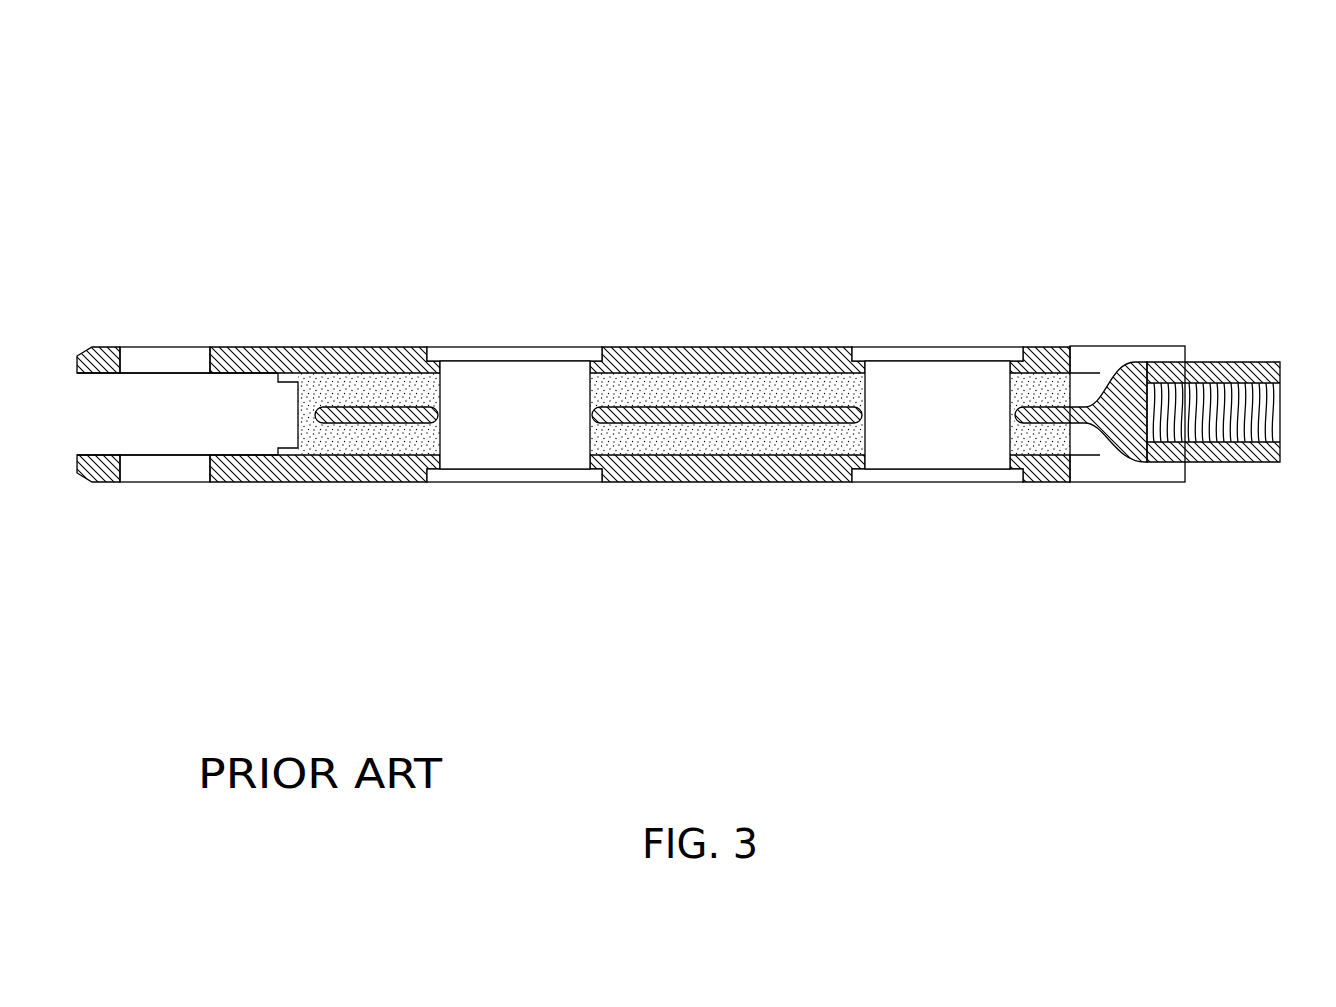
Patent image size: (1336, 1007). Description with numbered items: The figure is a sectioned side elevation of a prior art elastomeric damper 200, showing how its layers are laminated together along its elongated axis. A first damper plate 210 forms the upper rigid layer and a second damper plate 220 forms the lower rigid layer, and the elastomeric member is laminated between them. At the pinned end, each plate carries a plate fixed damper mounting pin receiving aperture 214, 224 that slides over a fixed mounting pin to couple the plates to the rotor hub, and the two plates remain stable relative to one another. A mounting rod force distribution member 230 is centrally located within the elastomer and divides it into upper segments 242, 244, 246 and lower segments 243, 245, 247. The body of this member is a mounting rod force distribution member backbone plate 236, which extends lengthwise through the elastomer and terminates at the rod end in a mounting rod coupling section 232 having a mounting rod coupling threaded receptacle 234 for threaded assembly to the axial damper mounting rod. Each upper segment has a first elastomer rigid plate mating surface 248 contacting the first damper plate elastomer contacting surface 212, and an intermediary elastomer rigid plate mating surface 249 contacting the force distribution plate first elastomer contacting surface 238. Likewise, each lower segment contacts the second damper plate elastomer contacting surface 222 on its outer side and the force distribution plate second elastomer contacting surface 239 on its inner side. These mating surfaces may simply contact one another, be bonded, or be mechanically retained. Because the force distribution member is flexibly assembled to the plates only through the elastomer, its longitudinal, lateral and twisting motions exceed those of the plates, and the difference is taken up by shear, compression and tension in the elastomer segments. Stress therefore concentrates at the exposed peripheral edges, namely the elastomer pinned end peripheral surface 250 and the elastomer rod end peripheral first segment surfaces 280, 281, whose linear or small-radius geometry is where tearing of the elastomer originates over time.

The elastomeric damper 200 is at (972, 130).
The first damper plate 210 is at (254, 348).
The first damper plate elastomer contacting surface 212 is at (231, 375).
The plate fixed damper mounting pin receiving aperture 214 is at (160, 358).
The second damper plate 220 is at (408, 482).
The second damper plate elastomer contacting surface 222 is at (231, 453).
The plate fixed damper mounting pin receiving aperture 224 is at (160, 468).
The mounting rod force distribution member 230 is at (1245, 350).
The mounting rod coupling section 232 is at (1264, 462).
The mounting rod coupling threaded receptacle 234 is at (1207, 412).
The mounting rod force distribution member backbone plate 236 is at (338, 421).
The force distribution plate first elastomer contacting surface 238 is at (632, 406).
The force distribution plate second elastomer contacting surface 239 is at (632, 424).
The upper segment 242 is at (1029, 347).
The lower segment 243 is at (1045, 440).
The upper segment 244 is at (496, 405).
The lower segment 245 is at (785, 438).
The upper segment 246 is at (378, 392).
The lower segment 247 is at (385, 440).
The first elastomer rigid plate mating surface 248 is at (813, 352).
The intermediary elastomer rigid plate mating surface 249 is at (823, 424).
The elastomer pinned end peripheral surface 250 is at (293, 417).
The elastomer rod end peripheral first segment surface 280 is at (1070, 388).
The elastomer rod end peripheral first segment surface 281 is at (1080, 437).